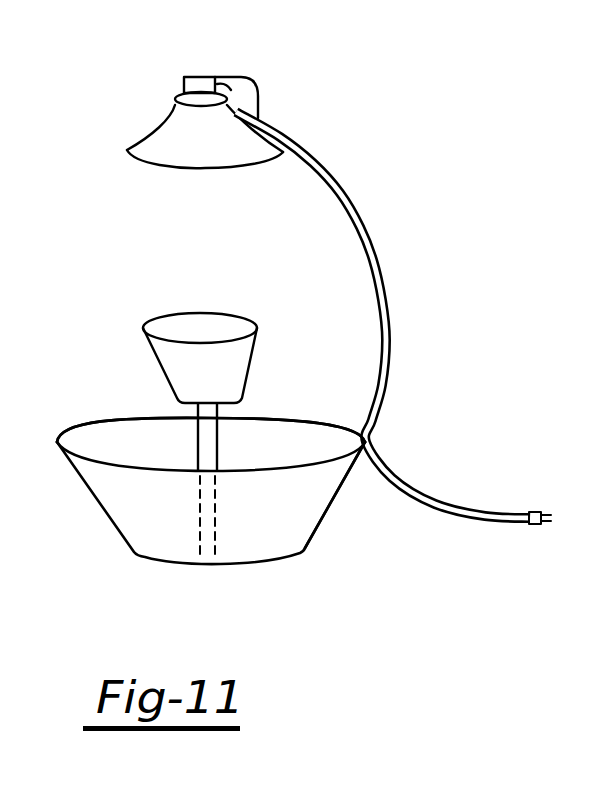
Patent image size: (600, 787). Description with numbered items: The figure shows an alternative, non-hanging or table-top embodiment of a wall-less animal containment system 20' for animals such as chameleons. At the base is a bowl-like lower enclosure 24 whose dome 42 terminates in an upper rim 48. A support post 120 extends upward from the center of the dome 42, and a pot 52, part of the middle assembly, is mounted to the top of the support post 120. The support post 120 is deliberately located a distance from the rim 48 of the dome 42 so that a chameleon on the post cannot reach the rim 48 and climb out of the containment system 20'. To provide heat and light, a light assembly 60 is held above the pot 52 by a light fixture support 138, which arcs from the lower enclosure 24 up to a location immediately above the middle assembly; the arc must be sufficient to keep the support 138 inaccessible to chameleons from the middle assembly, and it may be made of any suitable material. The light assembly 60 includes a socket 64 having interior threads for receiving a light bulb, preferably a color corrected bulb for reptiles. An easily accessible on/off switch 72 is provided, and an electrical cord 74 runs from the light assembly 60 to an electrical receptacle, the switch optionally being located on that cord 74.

The containment system 20' is at (384, 115).
The lower enclosure 24 is at (316, 530).
The dome 42 is at (130, 516).
The rim 48 is at (280, 418).
The pot 52 is at (164, 363).
The light assembly 60 is at (194, 153).
The socket 64 is at (191, 77).
The on/off switch 72 is at (222, 82).
The electrical cord 74 is at (533, 510).
The support post 120 is at (204, 435).
The light fixture support 138 is at (378, 262).